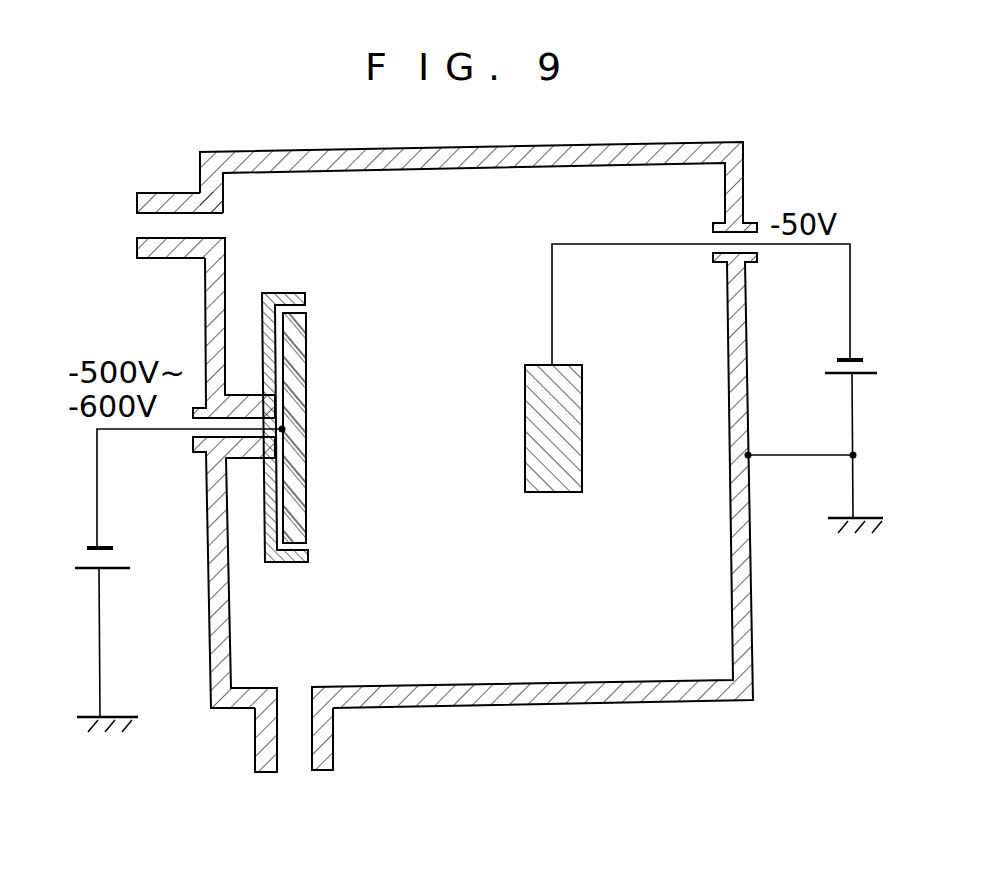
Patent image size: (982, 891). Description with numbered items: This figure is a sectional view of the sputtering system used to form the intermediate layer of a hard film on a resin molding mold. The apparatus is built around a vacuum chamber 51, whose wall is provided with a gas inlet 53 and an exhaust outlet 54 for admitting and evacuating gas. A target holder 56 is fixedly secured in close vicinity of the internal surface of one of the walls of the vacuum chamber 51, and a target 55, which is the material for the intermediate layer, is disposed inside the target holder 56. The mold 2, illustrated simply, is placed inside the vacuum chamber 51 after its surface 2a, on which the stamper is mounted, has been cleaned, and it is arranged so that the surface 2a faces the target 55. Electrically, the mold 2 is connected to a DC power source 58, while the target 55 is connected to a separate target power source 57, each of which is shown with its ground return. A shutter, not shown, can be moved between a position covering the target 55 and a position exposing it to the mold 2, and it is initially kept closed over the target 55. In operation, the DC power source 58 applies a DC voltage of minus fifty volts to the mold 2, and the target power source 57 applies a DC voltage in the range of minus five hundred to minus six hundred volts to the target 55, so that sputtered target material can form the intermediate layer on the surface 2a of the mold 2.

The mold 2 is at (550, 477).
The surface 2a is at (523, 420).
The vacuum chamber 51 is at (557, 690).
The gas inlet 53 is at (150, 228).
The exhaust outlet 54 is at (293, 755).
The target 55 is at (292, 360).
The target holder 56 is at (297, 563).
The target power source 57 is at (128, 554).
The DC power source 58 is at (830, 368).